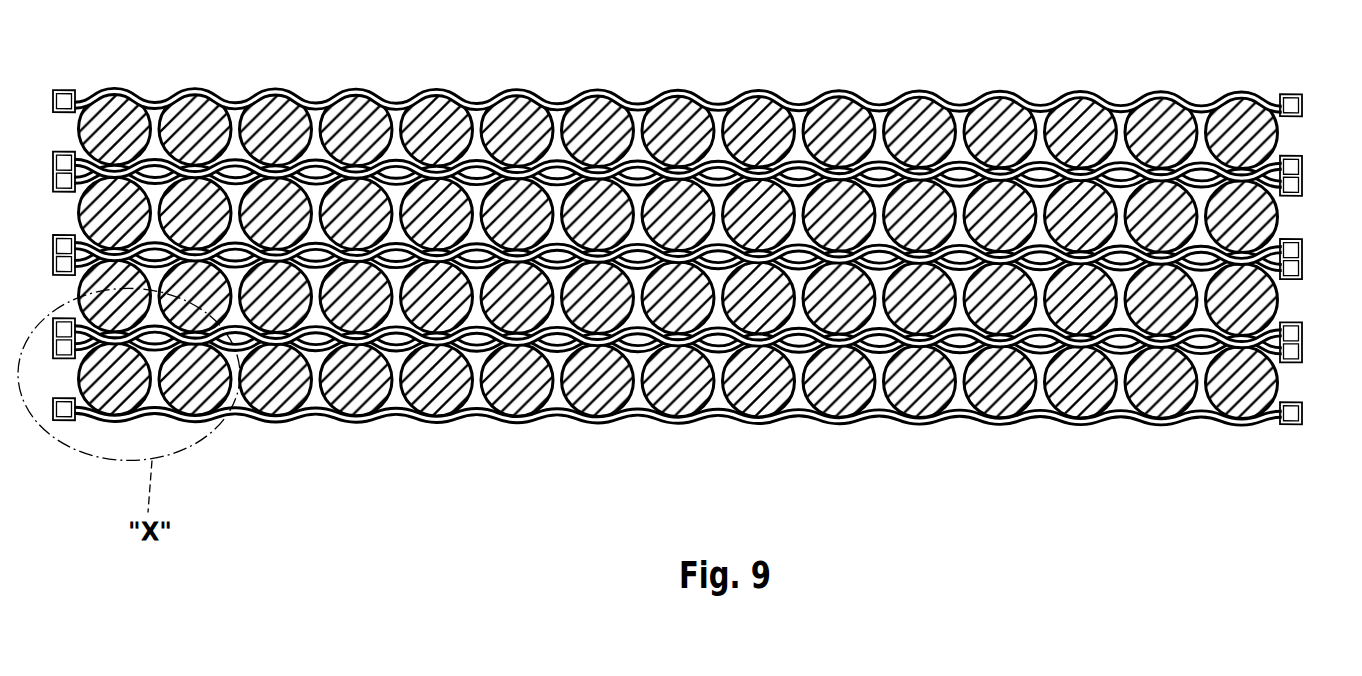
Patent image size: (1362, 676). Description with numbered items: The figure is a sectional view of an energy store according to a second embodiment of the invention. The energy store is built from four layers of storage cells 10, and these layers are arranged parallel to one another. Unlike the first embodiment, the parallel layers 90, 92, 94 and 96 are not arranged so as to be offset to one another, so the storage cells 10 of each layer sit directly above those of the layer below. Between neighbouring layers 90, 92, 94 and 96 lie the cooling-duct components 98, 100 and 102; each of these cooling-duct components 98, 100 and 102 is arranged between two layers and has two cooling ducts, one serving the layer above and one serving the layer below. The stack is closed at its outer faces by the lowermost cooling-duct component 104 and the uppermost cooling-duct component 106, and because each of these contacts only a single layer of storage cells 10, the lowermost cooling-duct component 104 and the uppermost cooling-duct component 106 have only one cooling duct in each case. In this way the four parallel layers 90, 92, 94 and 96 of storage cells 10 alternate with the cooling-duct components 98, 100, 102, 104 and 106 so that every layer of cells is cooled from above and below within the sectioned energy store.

The storage cells 10 is at (843, 125).
The layer 90 is at (715, 103).
The layer 92 is at (1296, 212).
The layer 94 is at (1296, 296).
The layer 96 is at (1296, 378).
The cooling-duct component 98 is at (240, 172).
The cooling-duct component 100 is at (270, 220).
The cooling-duct component 102 is at (250, 340).
The lowermost cooling-duct component 104 is at (400, 418).
The uppermost cooling-duct component 106 is at (478, 104).